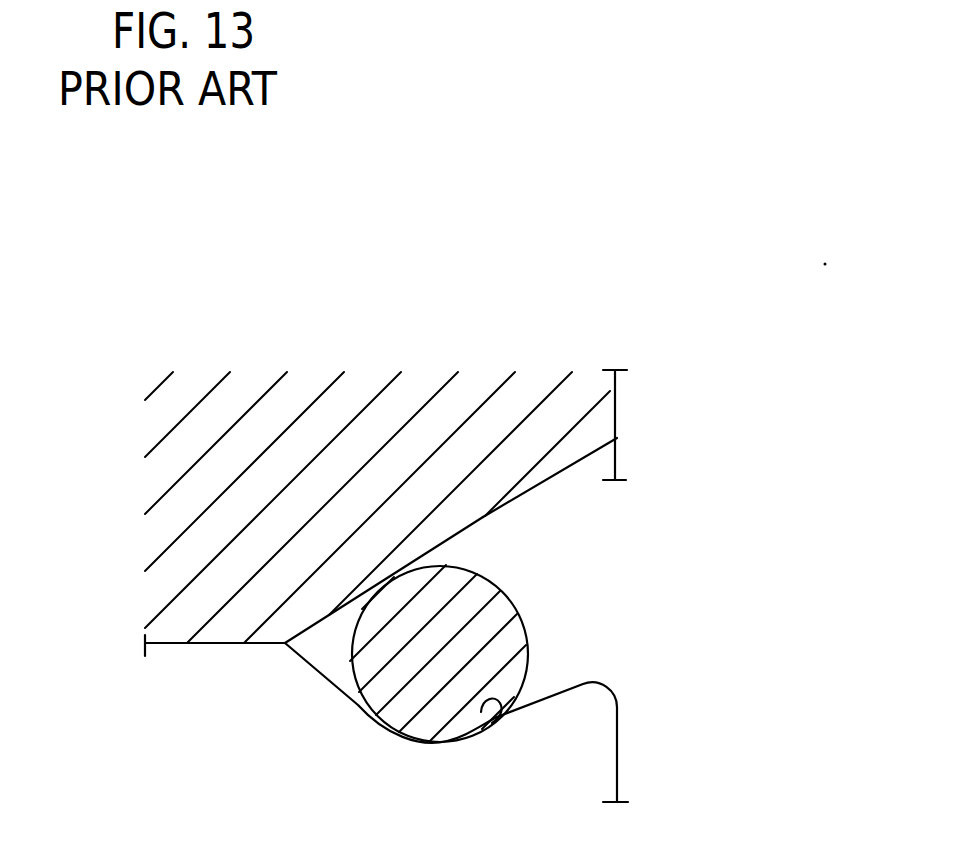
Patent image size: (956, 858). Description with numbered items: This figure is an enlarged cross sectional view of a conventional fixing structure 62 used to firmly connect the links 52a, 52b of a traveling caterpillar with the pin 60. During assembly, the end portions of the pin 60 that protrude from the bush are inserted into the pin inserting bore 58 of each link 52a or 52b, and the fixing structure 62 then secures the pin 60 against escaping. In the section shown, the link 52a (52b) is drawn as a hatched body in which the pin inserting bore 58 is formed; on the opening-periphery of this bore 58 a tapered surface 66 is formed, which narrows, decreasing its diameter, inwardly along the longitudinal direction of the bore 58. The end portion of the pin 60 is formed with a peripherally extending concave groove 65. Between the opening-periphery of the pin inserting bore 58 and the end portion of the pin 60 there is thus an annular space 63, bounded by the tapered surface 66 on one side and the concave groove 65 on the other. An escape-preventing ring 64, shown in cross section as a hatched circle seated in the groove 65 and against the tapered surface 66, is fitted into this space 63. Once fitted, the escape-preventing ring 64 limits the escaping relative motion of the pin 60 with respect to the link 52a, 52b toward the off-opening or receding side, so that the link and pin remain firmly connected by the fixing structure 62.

The link 52a is at (578, 403).
The link 52b is at (713, 425).
The pin inserting bore 58 is at (549, 482).
The tapered surface 66 is at (473, 528).
The fixing structure 62 is at (670, 472).
The space 63 is at (592, 610).
The escape-preventing ring 64 is at (513, 667).
The peripherally extending concave groove 65 is at (481, 712).
The pin 60 is at (619, 752).